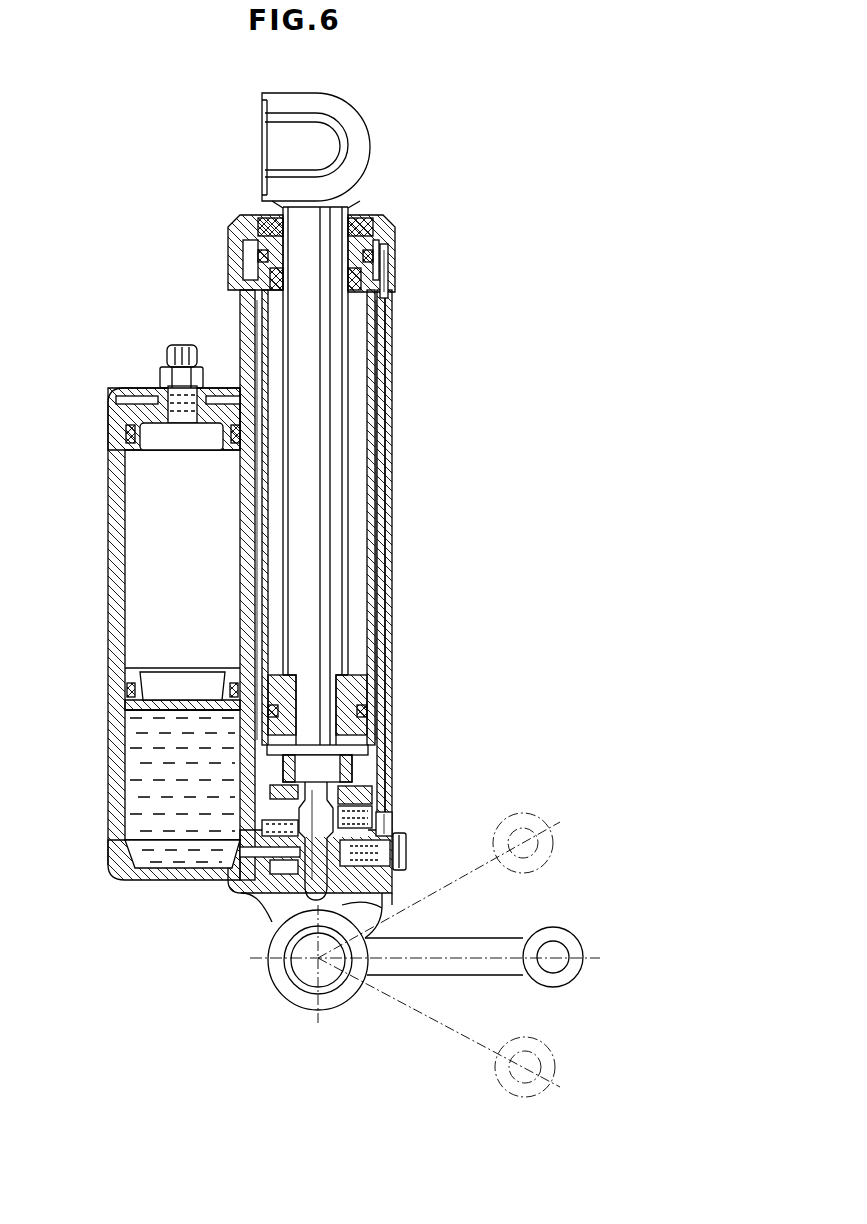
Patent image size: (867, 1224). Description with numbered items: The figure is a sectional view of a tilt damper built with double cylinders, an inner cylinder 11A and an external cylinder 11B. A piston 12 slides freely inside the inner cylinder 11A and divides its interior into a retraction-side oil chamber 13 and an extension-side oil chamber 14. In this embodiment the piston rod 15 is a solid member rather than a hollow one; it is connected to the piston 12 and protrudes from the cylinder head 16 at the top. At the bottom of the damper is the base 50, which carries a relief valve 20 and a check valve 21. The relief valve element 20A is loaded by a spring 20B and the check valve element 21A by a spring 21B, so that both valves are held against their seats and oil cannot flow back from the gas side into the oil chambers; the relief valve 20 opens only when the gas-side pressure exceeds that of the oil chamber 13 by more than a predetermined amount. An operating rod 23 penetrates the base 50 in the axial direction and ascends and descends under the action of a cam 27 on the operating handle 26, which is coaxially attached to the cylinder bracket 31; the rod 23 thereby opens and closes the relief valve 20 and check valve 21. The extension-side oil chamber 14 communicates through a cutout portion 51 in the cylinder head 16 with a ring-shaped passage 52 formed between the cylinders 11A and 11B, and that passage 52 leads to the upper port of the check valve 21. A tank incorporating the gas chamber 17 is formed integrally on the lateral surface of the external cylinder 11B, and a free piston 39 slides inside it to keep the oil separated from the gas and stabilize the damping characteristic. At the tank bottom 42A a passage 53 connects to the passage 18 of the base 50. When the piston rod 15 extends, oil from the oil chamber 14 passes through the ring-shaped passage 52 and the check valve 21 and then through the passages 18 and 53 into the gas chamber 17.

The inner cylinder 11A is at (378, 456).
The external cylinder 11B is at (384, 403).
The piston 12 is at (362, 698).
The retraction-side oil chamber 13 is at (358, 746).
The extension-side oil chamber 14 is at (372, 636).
The piston rod 15 is at (340, 553).
The cylinder head 16 is at (393, 280).
The gas chamber 17 is at (125, 553).
The passage 18 is at (262, 962).
The relief valve 20 is at (368, 764).
The relief valve element 20A is at (272, 834).
The relief valve spring 20B is at (290, 787).
The check valve 21 is at (407, 850).
The check valve element 21A is at (372, 790).
The check valve spring 21B is at (372, 814).
The operating rod 23 is at (300, 942).
The operating handle 26 is at (410, 992).
The cam 27 is at (380, 912).
The cylinder bracket 31 is at (291, 1010).
The free piston 39 is at (130, 722).
The tank bottom 42A is at (112, 800).
The base 50 is at (394, 825).
The cutout portion 51 is at (392, 300).
The ring-shaped passage 52 is at (378, 598).
The passage 53 is at (284, 872).